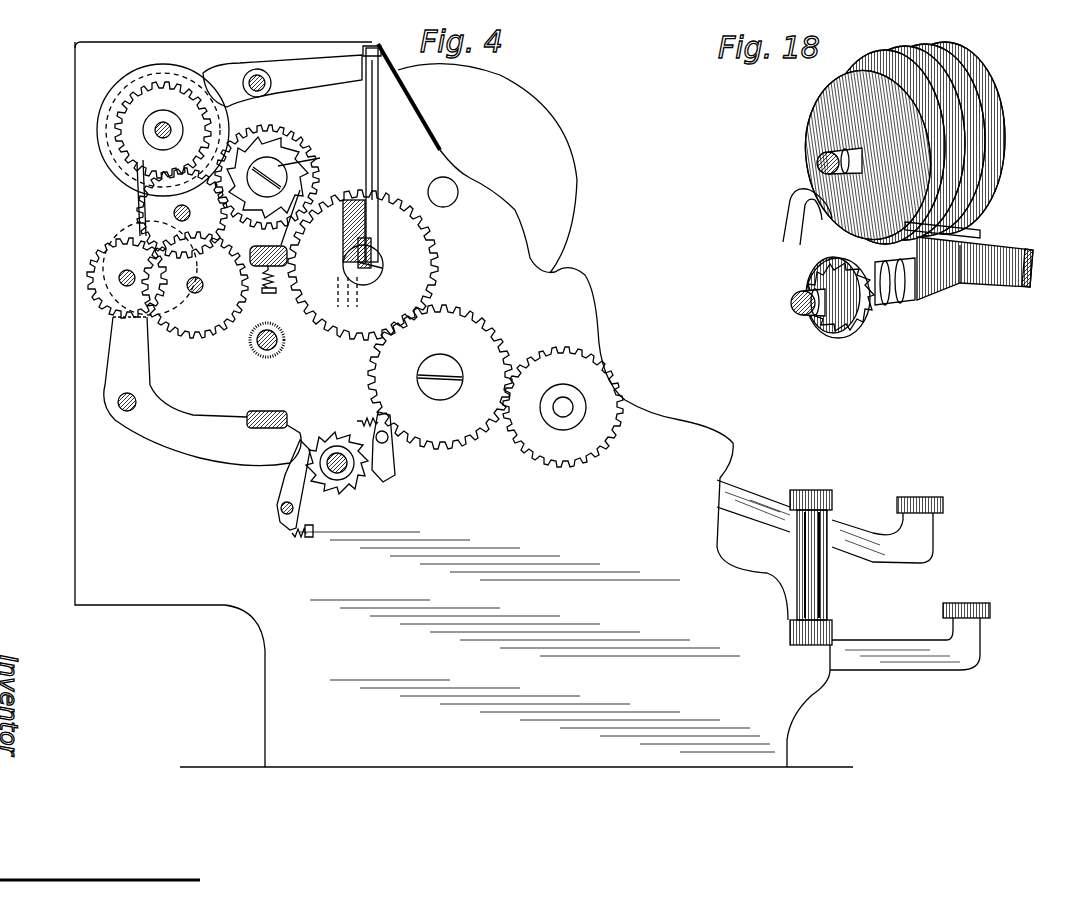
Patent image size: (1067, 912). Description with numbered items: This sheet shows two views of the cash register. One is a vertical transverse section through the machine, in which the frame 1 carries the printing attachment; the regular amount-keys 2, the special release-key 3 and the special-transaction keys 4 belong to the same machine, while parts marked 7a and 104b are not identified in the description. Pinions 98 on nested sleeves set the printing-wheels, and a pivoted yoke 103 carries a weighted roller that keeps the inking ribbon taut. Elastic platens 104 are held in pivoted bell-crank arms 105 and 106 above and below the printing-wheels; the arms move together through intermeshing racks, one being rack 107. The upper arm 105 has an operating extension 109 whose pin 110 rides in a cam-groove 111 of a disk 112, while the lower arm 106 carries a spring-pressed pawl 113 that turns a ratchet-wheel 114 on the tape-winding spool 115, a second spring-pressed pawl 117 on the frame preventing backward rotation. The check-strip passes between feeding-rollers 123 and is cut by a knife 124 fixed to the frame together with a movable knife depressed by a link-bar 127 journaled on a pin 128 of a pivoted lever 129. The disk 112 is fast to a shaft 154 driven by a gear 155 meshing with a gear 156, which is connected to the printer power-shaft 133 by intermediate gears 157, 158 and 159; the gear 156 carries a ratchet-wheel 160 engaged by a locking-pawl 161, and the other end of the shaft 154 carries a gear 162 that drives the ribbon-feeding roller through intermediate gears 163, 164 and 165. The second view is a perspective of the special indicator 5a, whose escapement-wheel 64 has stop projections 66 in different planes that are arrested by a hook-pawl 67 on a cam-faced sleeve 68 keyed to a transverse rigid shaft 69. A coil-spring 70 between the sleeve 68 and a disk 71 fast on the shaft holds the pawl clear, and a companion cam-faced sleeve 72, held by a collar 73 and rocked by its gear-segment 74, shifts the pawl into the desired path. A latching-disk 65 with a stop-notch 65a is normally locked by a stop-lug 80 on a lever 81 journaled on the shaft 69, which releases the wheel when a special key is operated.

In FIG. 4, the frame 1 is at (343, 263).
In FIG. 4, the regular amount-keys 2 is at (811, 567).
In FIG. 4, the special release-key 3 is at (840, 528).
In FIG. 4, the special-transaction keys 4 is at (868, 645).
In FIG. 4, the frame casing 7a is at (464, 404).
In FIG. 4, the pinion 98 is at (283, 340).
In FIG. 4, the pivoted yoke 103 is at (113, 347).
In FIG. 4, the elastic platen 104 is at (263, 406).
In FIG. 4, the gear 104b is at (195, 285).
In FIG. 4, the pivoted arm 105 is at (250, 266).
In FIG. 4, the pivoted arm 106 is at (203, 391).
In FIG. 4, the rack 107 is at (113, 333).
In FIG. 4, the operating extension 109 is at (137, 178).
In FIG. 4, the pin 110 is at (98, 132).
In FIG. 4, the cam-groove 111 is at (128, 93).
In FIG. 4, the disk 112 is at (166, 73).
In FIG. 4, the spring-pressed pawl 113 is at (390, 454).
In FIG. 4, the ratchet-wheel 114 is at (368, 485).
In FIG. 4, the tape-winding spool 115 is at (343, 477).
In FIG. 4, the spring-pressed pawl 117 is at (280, 488).
In FIG. 4, the feeding-rollers 123 is at (377, 237).
In FIG. 4, the knife 124 is at (357, 292).
In FIG. 4, the link-bar 127 is at (380, 163).
In FIG. 4, the pin 128 is at (381, 88).
In FIG. 4, the pivoted lever 129 is at (282, 81).
In FIG. 4, the printer power-shaft 133 is at (573, 416).
In FIG. 18, the printer power-shaft 133 is at (818, 166).
In FIG. 4, the shaft 154 is at (163, 124).
In FIG. 4, the gear 155 is at (210, 115).
In FIG. 4, the gear 156 is at (293, 138).
In FIG. 4, the intermediate gear 157 is at (432, 231).
In FIG. 4, the intermediate gear 158 is at (410, 327).
In FIG. 4, the intermediate gear 159 is at (543, 367).
In FIG. 4, the ratchet-wheel 160 is at (283, 183).
In FIG. 4, the locking-pawl 161 is at (310, 195).
In FIG. 4, the gear 162 is at (137, 143).
In FIG. 4, the intermediate gear 163 is at (153, 212).
In FIG. 4, the intermediate gear 164 is at (105, 252).
In FIG. 4, the intermediate gear 165 is at (112, 279).
In FIG. 18, the special indicator 5a is at (1003, 122).
In FIG. 18, the escapement-wheel 64 is at (809, 133).
In FIG. 18, the latching-disk 65 is at (995, 222).
In FIG. 18, the stop-notch 65a is at (950, 270).
In FIG. 18, the stop projections 66 is at (808, 241).
In FIG. 18, the hook-pawl 67 is at (795, 214).
In FIG. 18, the cam-faced sleeve 68 is at (810, 262).
In FIG. 18, the transverse rigid shaft 69 is at (792, 306).
In FIG. 18, the coil-spring 70 is at (893, 300).
In FIG. 18, the disk 71 is at (905, 290).
In FIG. 18, the cam-faced sleeve 72 is at (806, 286).
In FIG. 18, the collar 73 is at (832, 330).
In FIG. 18, the gear-segment 74 is at (860, 328).
In FIG. 18, the stop-lug 80 is at (985, 228).
In FIG. 18, the lever 81 is at (1020, 288).